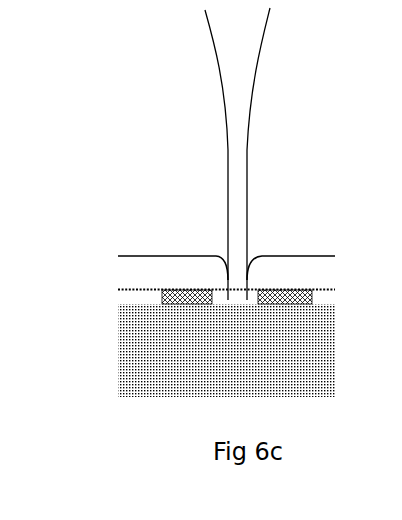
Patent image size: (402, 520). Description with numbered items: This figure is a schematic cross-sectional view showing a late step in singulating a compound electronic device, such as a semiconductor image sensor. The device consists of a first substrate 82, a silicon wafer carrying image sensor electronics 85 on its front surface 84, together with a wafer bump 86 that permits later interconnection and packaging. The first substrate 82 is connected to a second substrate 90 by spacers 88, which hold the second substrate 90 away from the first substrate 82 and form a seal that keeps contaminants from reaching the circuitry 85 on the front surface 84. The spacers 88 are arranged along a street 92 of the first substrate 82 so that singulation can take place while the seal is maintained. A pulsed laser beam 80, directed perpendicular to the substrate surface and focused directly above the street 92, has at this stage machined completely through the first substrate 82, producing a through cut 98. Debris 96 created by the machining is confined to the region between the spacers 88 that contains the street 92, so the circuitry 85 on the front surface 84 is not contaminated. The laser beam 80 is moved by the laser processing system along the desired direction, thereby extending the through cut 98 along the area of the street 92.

The pulsed laser beam 80 is at (228, 123).
The first substrate 82 is at (120, 273).
The front surface 84 is at (120, 290).
The image sensor electronics 85 is at (118, 290).
The wafer bump 86 is at (143, 255).
The spacer 88 is at (182, 304).
The second substrate 90 is at (117, 347).
The street 92 is at (227, 290).
The debris 96 is at (243, 297).
The through cut 98 is at (248, 268).